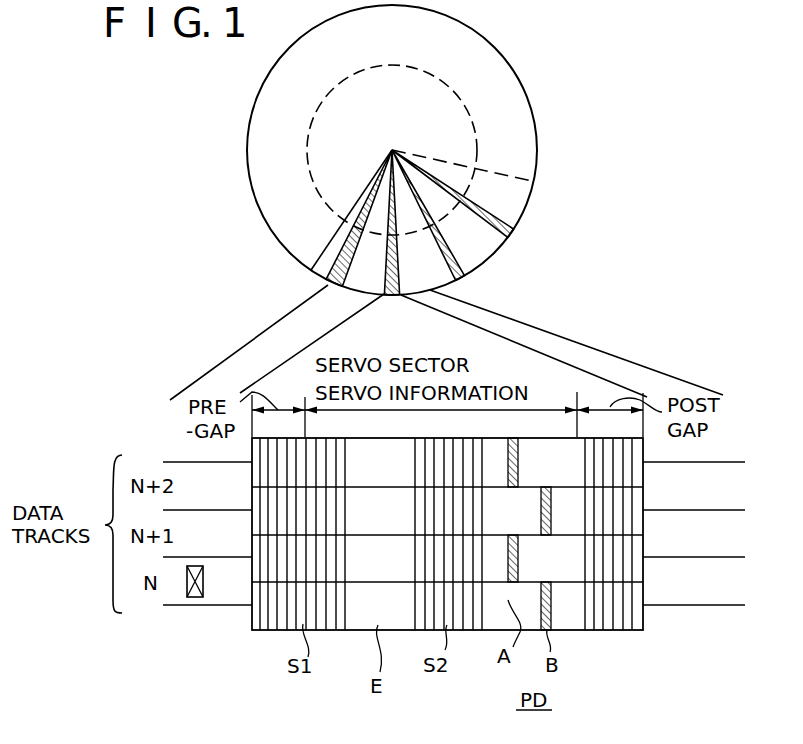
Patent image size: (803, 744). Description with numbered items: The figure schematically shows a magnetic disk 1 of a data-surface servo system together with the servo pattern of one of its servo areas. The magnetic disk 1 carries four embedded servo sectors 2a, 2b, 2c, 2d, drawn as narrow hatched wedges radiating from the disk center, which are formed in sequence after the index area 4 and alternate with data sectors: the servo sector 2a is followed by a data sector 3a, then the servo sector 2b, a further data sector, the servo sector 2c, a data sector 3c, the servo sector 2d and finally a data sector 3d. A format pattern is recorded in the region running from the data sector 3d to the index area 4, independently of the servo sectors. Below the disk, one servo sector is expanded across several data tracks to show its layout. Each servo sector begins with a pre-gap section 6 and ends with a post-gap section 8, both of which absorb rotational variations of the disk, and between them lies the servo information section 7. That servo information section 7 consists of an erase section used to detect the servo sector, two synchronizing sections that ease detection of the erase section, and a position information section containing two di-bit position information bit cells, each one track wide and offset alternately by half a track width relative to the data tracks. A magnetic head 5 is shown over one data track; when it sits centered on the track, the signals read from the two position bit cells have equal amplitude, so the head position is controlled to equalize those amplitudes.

The magnetic disk 1 is at (495, 70).
The servo sector 2a is at (326, 281).
The servo sector 2b is at (392, 296).
The servo sector 2c is at (466, 277).
The servo sector 2d is at (508, 234).
The data sector 3a is at (151, 496).
The data sector 3c is at (483, 250).
The data sector 3d is at (511, 198).
The index area 4 is at (305, 273).
The magnetic head 5 is at (195, 597).
The pre-gap section 6 is at (270, 456).
The servo information section 7 is at (473, 454).
The post-gap section 8 is at (602, 455).